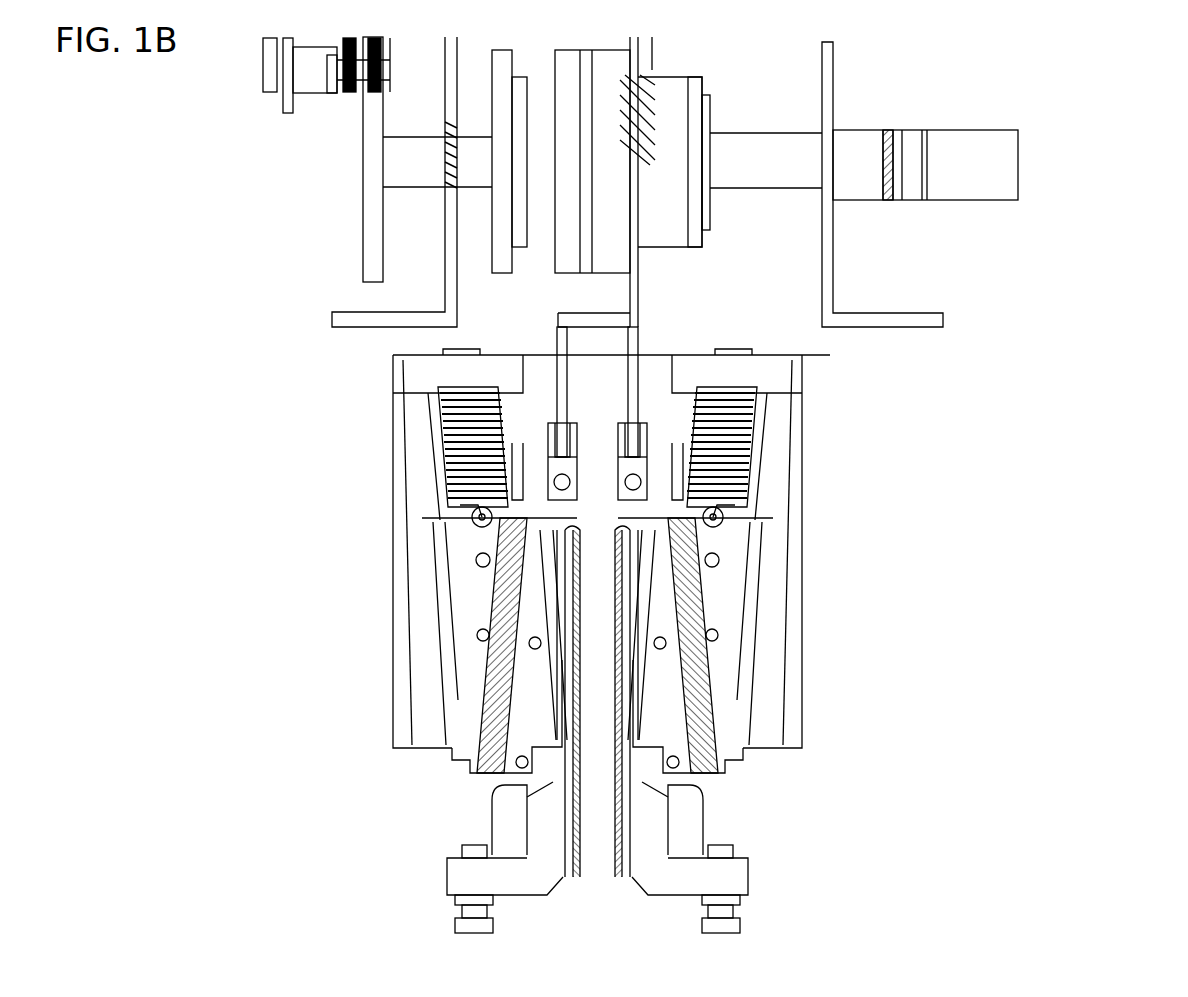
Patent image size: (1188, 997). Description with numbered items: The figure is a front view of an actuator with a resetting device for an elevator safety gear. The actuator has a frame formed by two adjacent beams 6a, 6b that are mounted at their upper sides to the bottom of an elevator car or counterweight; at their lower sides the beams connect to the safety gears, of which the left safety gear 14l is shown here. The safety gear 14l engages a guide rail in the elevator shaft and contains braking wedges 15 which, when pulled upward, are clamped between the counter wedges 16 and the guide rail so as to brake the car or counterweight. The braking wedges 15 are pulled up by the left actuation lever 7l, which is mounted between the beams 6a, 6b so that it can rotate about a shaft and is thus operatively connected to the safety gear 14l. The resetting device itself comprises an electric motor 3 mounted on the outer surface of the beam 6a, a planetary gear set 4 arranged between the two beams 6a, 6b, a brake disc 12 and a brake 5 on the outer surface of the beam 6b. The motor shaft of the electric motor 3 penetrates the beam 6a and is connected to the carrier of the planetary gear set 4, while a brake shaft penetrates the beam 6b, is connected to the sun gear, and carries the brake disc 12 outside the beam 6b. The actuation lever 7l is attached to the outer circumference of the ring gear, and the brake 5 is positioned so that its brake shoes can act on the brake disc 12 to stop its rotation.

The electric motor 3 is at (940, 173).
The planetary gear set 4 is at (553, 222).
The brake 5 is at (322, 72).
The beam 6a is at (917, 323).
The beam 6b is at (363, 223).
The left actuation lever 7l is at (630, 297).
The brake disc 12 is at (365, 325).
The left safety gear 14l is at (800, 585).
The braking wedge 15 is at (653, 615).
The counter wedge 16 is at (447, 613).